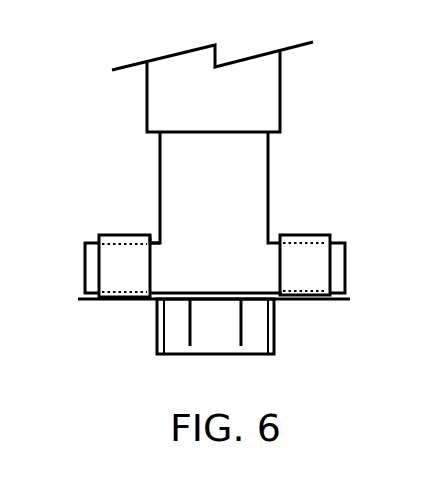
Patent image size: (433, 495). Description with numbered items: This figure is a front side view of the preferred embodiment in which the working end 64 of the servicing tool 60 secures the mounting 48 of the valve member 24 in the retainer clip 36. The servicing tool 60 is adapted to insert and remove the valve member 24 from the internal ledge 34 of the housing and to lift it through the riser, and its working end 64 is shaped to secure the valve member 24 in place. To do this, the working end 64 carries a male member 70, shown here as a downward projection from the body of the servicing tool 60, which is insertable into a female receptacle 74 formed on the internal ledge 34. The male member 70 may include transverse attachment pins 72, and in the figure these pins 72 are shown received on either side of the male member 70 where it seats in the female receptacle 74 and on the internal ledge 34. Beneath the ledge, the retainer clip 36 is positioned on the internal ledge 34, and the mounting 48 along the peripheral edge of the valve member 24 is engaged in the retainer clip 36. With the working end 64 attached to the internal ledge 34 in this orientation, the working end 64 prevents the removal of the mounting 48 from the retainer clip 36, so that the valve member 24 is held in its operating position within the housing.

The servicing tool 60 is at (270, 83).
The working end 64 is at (205, 260).
The male member 70 is at (146, 234).
The female receptacle 74 is at (113, 234).
The transverse attachment pins 72 is at (353, 237).
The internal ledge 34 is at (92, 300).
The valve member 24 is at (217, 355).
The mounting 48 is at (202, 345).
The retainer clip 36 is at (273, 337).